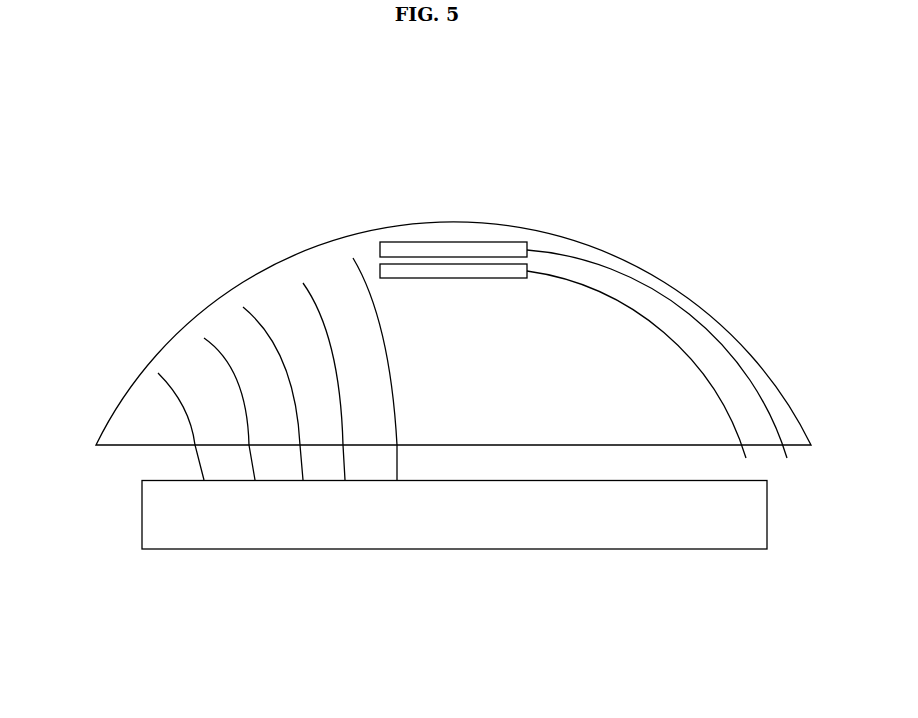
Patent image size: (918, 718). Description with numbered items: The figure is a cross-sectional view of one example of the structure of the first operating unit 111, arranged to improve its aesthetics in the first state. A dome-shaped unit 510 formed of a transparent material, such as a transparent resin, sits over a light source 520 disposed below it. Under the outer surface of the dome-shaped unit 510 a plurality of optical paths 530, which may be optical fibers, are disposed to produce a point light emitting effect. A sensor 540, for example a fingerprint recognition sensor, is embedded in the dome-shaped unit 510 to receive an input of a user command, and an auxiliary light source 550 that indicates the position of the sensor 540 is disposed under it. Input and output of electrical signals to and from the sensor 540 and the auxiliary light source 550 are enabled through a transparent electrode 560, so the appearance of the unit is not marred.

The first operating unit 111 is at (75, 112).
The dome-shaped unit 510 is at (265, 297).
The light source 520 is at (465, 540).
The optical paths 530 is at (182, 406).
The sensor 540 is at (465, 243).
The auxiliary light source 550 is at (502, 263).
The transparent electrode 560 is at (705, 373).